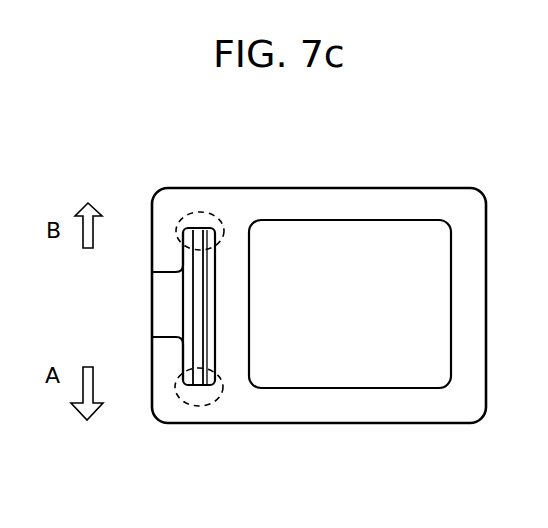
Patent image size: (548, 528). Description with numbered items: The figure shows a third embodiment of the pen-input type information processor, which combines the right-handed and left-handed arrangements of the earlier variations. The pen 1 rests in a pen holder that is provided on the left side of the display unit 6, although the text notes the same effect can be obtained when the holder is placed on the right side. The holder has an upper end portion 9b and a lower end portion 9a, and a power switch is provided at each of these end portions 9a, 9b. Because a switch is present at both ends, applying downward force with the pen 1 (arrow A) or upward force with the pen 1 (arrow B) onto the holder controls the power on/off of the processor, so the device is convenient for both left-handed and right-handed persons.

The pen 1 is at (198, 305).
The display unit 6 is at (385, 243).
The lower end portion of pen holder 9a is at (193, 406).
The upper end portion of pen holder 9b is at (189, 210).